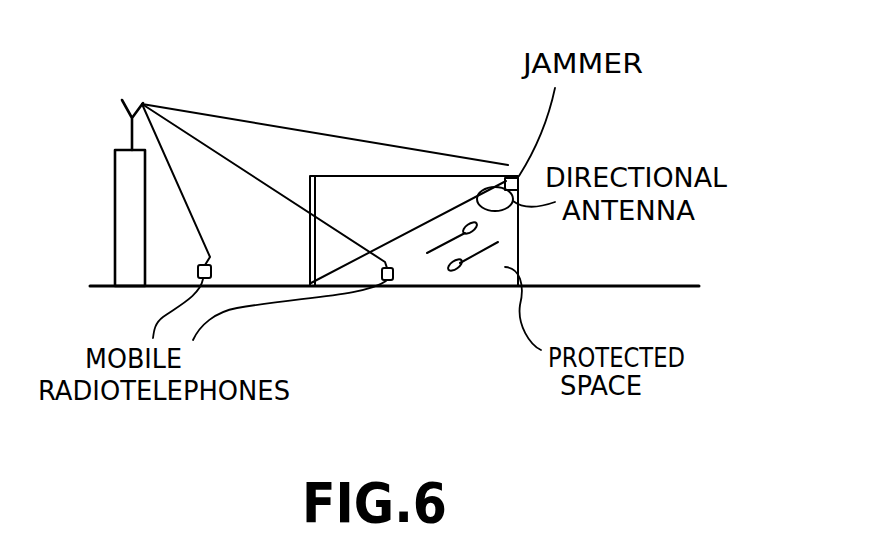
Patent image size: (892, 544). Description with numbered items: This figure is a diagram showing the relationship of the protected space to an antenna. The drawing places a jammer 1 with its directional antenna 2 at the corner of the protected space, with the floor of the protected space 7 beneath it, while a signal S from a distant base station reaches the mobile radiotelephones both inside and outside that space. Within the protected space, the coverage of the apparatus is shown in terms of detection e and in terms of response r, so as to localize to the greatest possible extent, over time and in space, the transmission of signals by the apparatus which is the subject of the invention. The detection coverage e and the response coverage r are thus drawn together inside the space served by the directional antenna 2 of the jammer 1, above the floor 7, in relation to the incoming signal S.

The jammer 1 is at (517, 176).
The directional antenna 2 is at (494, 196).
The protected space 7 is at (437, 288).
The base station signal S is at (327, 134).
The detection coverage e is at (437, 231).
The response coverage r is at (491, 265).